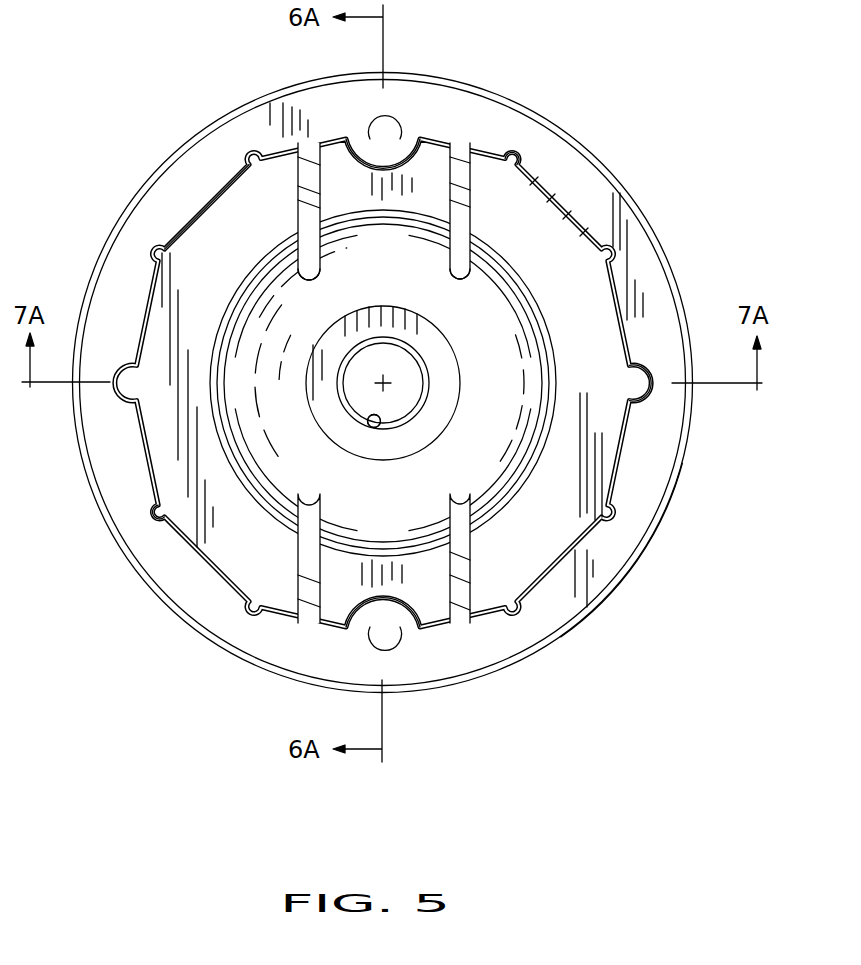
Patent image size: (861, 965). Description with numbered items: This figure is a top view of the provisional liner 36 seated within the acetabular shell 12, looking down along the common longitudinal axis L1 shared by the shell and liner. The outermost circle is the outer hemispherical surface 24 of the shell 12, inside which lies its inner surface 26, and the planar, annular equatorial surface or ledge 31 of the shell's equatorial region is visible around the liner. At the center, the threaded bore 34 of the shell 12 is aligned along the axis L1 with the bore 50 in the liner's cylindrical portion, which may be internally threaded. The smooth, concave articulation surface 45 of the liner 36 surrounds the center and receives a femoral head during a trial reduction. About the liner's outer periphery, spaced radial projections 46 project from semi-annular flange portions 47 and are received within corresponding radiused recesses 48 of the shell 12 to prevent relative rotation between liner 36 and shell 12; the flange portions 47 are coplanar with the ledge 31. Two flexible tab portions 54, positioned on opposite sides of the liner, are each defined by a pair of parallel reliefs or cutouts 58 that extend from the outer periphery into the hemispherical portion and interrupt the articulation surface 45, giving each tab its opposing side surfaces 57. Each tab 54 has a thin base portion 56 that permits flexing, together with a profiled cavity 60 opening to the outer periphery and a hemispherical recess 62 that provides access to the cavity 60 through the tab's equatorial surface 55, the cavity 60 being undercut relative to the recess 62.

The acetabular shell 12 is at (541, 694).
The outer hemispherical surface 24 is at (626, 578).
The inner surface 26 is at (615, 448).
The equatorial surface or ledge 31 is at (655, 262).
The threaded bore 34 is at (378, 428).
The bore 50 is at (374, 421).
The provisional liner 36 is at (562, 220).
The articulation surface 45 is at (500, 380).
The radial projections 46 is at (523, 157).
The semi-annular flange portions 47 is at (197, 255).
The radiused recesses 48 is at (508, 150).
The flexible tab portions 54 is at (431, 110).
The equatorial surfaces 55 is at (427, 187).
The base portion 56 is at (382, 252).
The side surfaces 57 is at (298, 198).
The reliefs or cutouts 58 is at (470, 274).
The profiled cavities 60 is at (393, 156).
The hemispherical recesses 62 is at (377, 170).
The longitudinal axis L1 is at (384, 383).